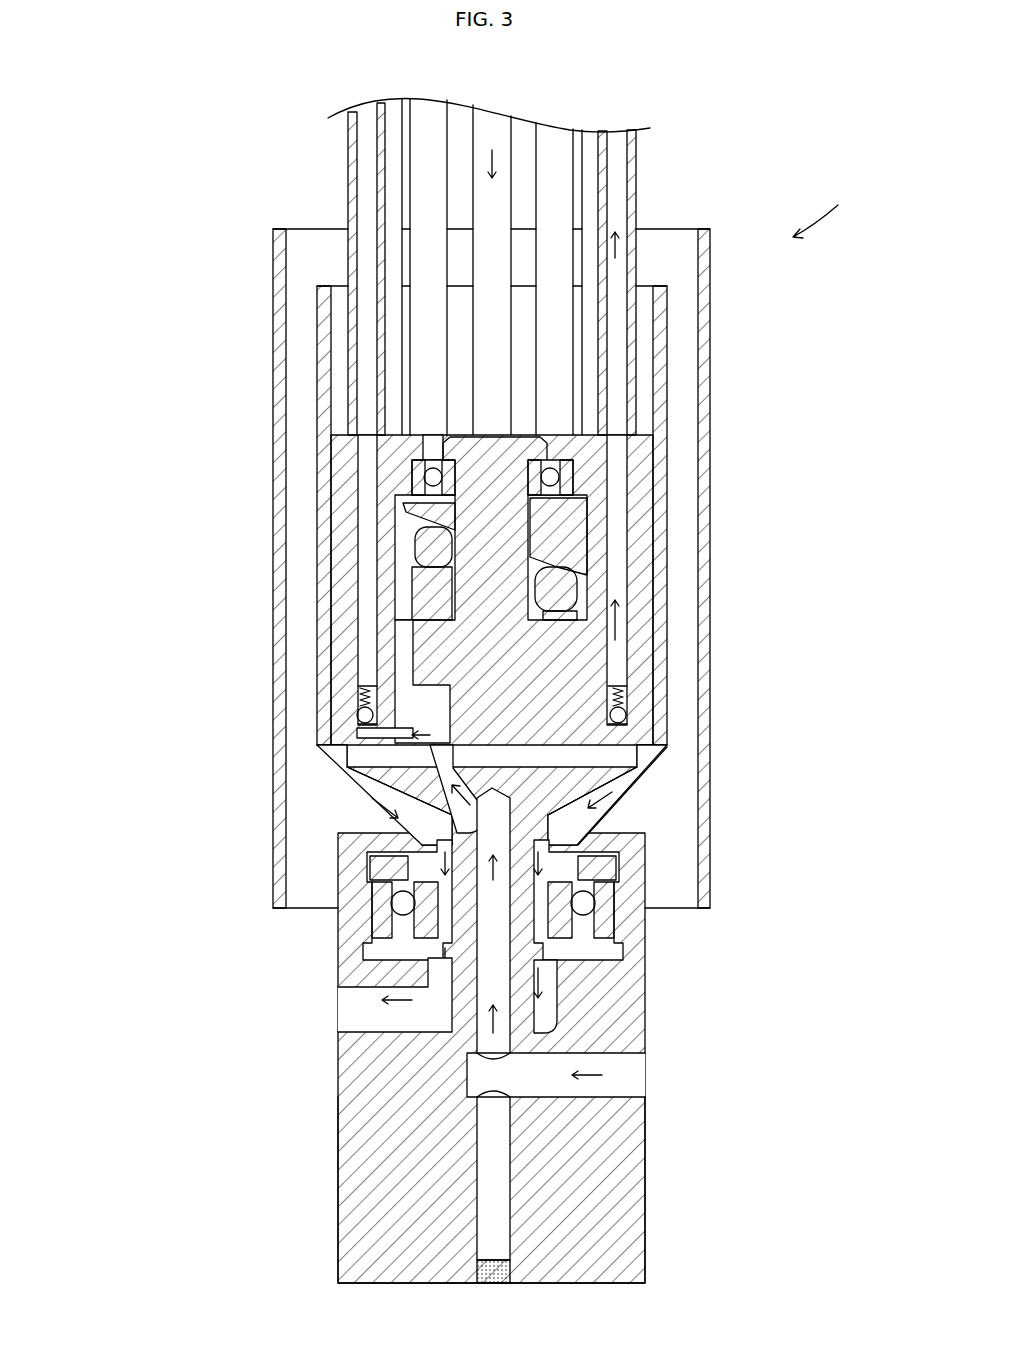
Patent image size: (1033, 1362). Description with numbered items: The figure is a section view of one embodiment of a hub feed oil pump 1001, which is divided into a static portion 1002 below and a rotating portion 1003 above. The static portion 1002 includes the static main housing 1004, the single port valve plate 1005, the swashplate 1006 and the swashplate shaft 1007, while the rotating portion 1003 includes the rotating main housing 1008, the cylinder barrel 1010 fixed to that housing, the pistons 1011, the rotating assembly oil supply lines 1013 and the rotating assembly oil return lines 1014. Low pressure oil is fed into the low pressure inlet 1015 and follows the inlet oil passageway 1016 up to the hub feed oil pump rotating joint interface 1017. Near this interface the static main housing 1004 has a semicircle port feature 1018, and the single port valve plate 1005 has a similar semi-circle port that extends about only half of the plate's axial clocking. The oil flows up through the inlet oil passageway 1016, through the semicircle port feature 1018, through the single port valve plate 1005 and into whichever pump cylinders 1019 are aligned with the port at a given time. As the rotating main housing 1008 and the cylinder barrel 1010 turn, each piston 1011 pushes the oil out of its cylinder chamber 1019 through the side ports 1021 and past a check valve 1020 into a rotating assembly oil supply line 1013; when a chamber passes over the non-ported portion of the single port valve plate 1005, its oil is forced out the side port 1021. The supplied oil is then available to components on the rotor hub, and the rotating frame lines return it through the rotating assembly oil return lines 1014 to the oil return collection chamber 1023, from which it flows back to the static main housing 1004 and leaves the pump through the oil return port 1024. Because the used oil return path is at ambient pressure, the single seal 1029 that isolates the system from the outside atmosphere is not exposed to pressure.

The hub feed oil pump 1001 is at (878, 198).
The static portion 1002 is at (339, 1025).
The rotating portion 1003 is at (370, 568).
The static main housing 1004 is at (645, 1157).
The single port valve plate 1005 is at (600, 793).
The swashplate 1006 is at (403, 508).
The swashplate shaft 1007 is at (540, 450).
The rotating main housing 1008 is at (667, 605).
The cylinder barrel 1010 is at (600, 762).
The pistons 1011 is at (405, 603).
The rotating assembly oil supply lines 1013 is at (348, 221).
The rotating assembly oil return lines 1014 is at (510, 147).
The low pressure inlet 1015 is at (645, 1075).
The inlet oil passageway 1016 is at (475, 1040).
The hub feed oil pump rotating joint interface 1017 is at (375, 790).
The semicircle port feature 1018 is at (392, 800).
The pump cylinders 1019 is at (413, 713).
The check valve 1020 is at (357, 698).
The side ports 1021 is at (400, 733).
The oil return collection chamber 1023 is at (378, 810).
The oil return port 1024 is at (338, 1007).
The seal 1029 is at (650, 838).